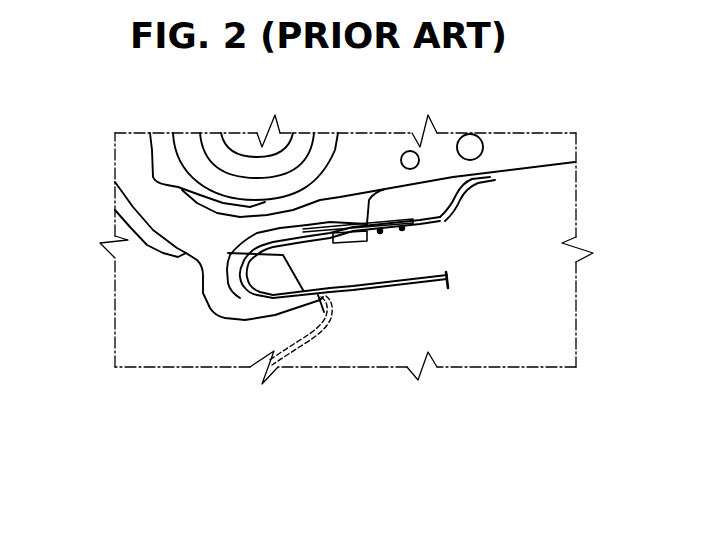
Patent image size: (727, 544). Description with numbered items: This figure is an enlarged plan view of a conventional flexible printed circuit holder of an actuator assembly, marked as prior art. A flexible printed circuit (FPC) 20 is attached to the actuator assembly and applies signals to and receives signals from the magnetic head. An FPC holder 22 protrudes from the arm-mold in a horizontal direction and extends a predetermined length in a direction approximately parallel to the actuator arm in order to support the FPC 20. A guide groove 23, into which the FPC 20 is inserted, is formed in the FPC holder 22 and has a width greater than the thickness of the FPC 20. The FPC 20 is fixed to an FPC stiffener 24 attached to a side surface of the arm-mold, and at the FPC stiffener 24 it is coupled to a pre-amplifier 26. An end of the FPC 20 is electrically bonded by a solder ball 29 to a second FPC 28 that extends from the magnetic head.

The flexible printed circuit (FPC) 20 is at (407, 291).
The FPC holder 22 is at (217, 295).
The guide groove 23 is at (245, 293).
The FPC stiffener 24 is at (397, 218).
The pre-amplifier 26 is at (353, 243).
The second FPC 28 is at (455, 188).
The solder ball 29 is at (388, 235).